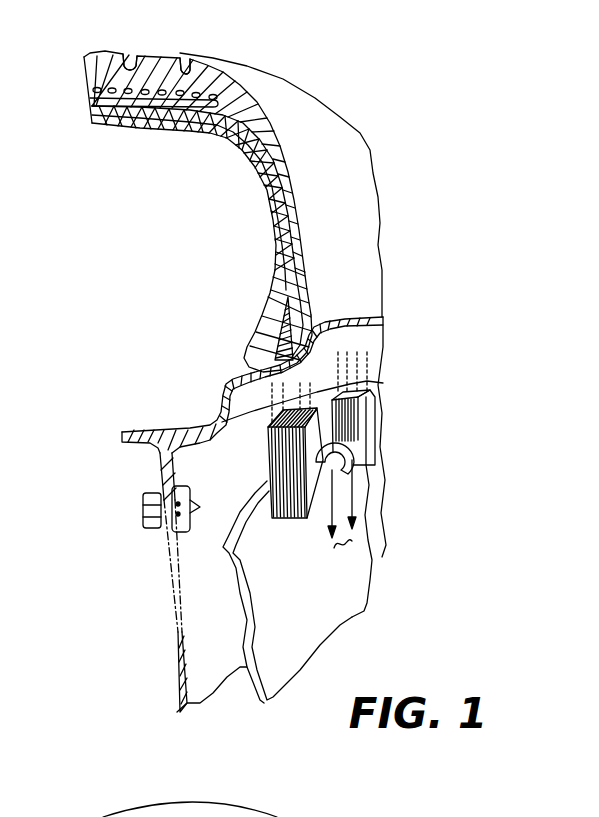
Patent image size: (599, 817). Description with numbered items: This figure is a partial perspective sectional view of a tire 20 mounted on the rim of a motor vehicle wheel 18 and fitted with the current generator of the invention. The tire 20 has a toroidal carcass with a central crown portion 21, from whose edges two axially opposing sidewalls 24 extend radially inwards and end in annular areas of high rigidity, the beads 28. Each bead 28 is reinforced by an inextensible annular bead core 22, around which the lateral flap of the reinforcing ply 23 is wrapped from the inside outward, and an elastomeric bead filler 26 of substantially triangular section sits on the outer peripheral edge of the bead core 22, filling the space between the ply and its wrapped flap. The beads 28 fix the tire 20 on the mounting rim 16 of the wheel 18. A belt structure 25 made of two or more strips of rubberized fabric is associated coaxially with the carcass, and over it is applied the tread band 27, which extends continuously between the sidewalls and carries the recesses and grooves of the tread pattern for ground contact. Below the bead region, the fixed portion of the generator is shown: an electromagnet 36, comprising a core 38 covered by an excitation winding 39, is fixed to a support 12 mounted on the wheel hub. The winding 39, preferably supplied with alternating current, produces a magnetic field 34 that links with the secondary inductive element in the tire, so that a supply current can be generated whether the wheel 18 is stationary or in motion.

The support 12 is at (352, 617).
The mounting rim 16 is at (217, 413).
The wheel 18 is at (158, 543).
The tire 20 is at (432, 216).
The central crown portion 21 is at (150, 54).
The bead core 22 is at (273, 348).
The reinforcing ply 23 is at (175, 112).
The sidewall 24 is at (350, 180).
The belt structure 25 is at (118, 100).
The bead filler 26 is at (280, 310).
The tread band 27 is at (193, 55).
The bead 28 is at (251, 340).
The magnetic field 34 is at (372, 347).
The electromagnet 36 is at (370, 439).
The core 38 is at (293, 518).
The excitation winding 39 is at (338, 470).